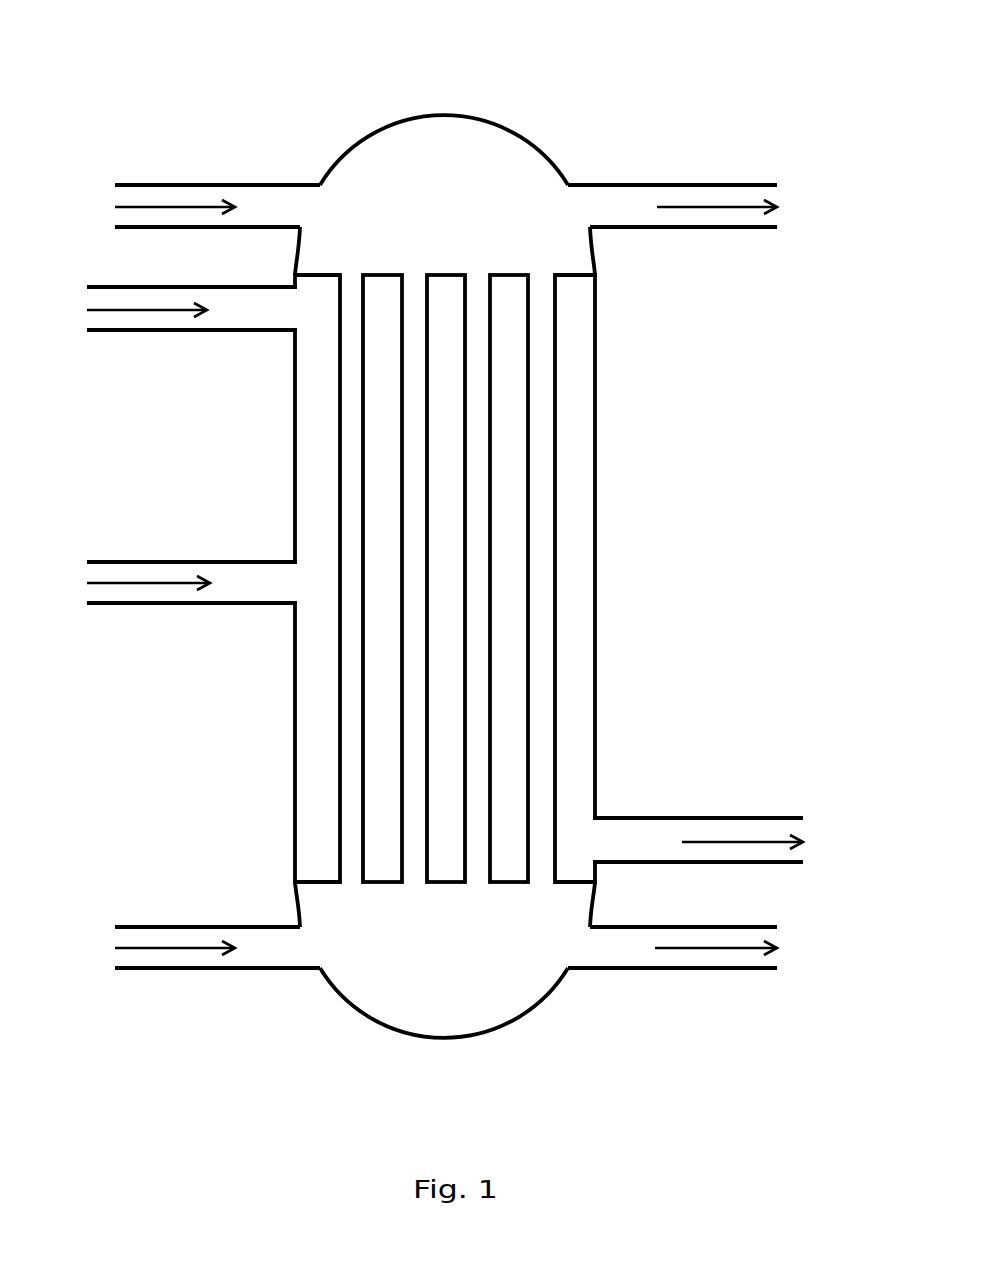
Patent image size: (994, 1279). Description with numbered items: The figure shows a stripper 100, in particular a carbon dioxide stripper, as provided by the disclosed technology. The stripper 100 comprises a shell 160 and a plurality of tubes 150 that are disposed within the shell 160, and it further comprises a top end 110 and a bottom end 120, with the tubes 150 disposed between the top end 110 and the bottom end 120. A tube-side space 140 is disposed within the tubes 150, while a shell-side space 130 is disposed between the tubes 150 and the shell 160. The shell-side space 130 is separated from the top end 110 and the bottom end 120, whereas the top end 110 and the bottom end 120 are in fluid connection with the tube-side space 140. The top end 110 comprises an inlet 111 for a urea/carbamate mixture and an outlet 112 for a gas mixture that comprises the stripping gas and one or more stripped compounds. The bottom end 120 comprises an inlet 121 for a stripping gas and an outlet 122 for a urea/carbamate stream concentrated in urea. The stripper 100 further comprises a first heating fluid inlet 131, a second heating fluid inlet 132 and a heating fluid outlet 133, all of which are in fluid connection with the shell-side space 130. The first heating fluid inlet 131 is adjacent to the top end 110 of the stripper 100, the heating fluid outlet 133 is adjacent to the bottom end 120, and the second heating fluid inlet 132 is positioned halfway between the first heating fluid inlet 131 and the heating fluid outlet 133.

The stripper 100 is at (115, 39).
The top end 110 is at (370, 120).
The inlet for a urea/carbamate mixture 111 is at (173, 185).
The outlet for a gas mixture 112 is at (662, 185).
The bottom end 120 is at (343, 1017).
The inlet for a stripping gas 121 is at (267, 925).
The outlet for a urea/carbamate stream concentrated in urea 122 is at (692, 970).
The shell-side space 130 is at (570, 343).
The first heating fluid inlet 131 is at (210, 332).
The second heating fluid inlet 132 is at (235, 603).
The heating fluid outlet 133 is at (660, 815).
The tube-side space 140 is at (353, 407).
The tubes 150 is at (365, 503).
The shell 160 is at (598, 702).